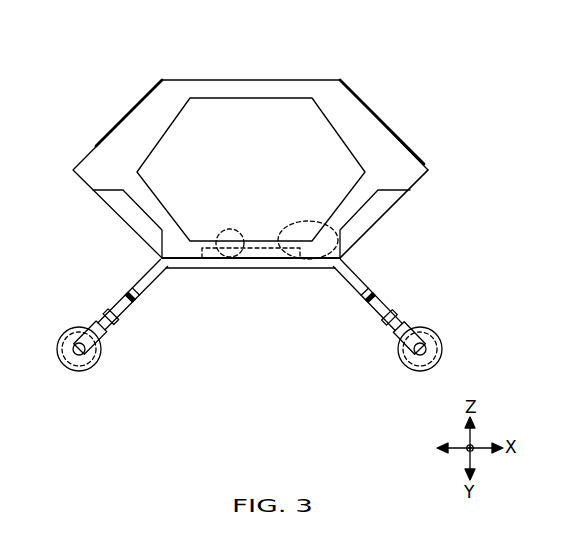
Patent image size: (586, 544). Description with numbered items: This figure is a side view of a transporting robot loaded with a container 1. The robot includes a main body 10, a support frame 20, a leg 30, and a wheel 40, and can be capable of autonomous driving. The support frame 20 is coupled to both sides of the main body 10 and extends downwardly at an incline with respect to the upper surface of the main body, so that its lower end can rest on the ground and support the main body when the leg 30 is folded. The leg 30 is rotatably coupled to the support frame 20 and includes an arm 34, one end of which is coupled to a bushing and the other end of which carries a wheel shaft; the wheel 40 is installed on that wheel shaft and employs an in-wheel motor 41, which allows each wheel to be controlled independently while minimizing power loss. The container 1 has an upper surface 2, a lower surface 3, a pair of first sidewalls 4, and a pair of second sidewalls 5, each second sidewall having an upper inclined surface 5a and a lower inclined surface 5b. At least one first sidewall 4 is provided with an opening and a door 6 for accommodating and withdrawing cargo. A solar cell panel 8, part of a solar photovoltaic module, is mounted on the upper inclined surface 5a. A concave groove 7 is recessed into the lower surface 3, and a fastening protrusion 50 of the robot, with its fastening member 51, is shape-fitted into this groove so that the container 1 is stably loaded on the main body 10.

The container 1 is at (333, 53).
The upper surface 2 is at (243, 90).
The lower surface 3 is at (318, 258).
The first sidewall 4 is at (114, 153).
The second sidewall 5 is at (423, 169).
The upper inclined surface 5a is at (424, 158).
The lower inclined surface 5b is at (415, 184).
The door 6 is at (205, 117).
The concave groove 7 is at (236, 257).
The solar cell panel 8 is at (119, 122).
The main body 10 is at (272, 268).
The support frame 20 is at (155, 279).
The leg 30 is at (236, 297).
The arm 34 is at (105, 333).
The wheel 40 is at (441, 341).
The in-wheel motor 41 is at (442, 343).
The fastening protrusion 50 is at (384, 240).
The fastening member 51 is at (352, 242).